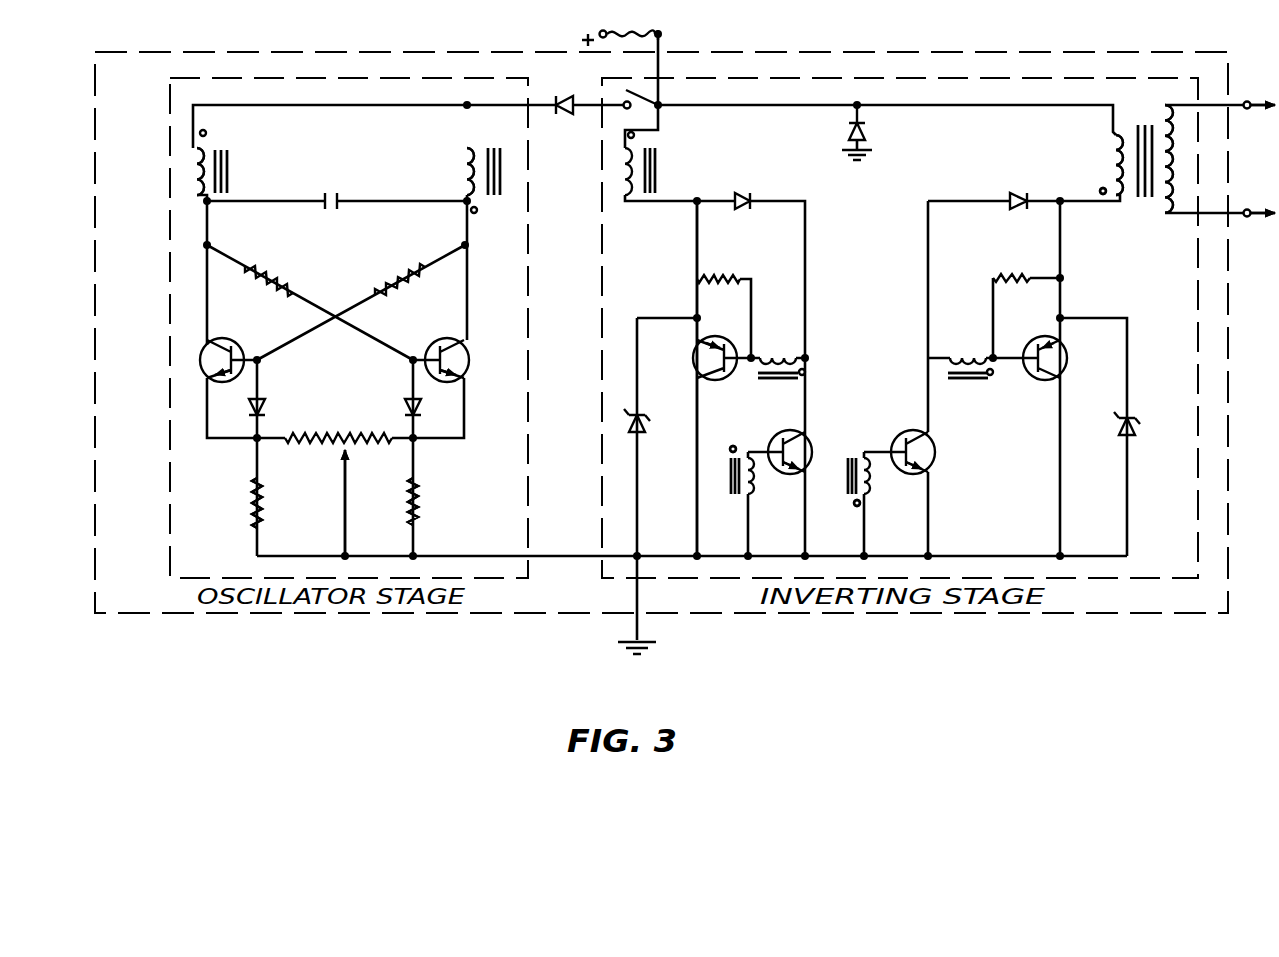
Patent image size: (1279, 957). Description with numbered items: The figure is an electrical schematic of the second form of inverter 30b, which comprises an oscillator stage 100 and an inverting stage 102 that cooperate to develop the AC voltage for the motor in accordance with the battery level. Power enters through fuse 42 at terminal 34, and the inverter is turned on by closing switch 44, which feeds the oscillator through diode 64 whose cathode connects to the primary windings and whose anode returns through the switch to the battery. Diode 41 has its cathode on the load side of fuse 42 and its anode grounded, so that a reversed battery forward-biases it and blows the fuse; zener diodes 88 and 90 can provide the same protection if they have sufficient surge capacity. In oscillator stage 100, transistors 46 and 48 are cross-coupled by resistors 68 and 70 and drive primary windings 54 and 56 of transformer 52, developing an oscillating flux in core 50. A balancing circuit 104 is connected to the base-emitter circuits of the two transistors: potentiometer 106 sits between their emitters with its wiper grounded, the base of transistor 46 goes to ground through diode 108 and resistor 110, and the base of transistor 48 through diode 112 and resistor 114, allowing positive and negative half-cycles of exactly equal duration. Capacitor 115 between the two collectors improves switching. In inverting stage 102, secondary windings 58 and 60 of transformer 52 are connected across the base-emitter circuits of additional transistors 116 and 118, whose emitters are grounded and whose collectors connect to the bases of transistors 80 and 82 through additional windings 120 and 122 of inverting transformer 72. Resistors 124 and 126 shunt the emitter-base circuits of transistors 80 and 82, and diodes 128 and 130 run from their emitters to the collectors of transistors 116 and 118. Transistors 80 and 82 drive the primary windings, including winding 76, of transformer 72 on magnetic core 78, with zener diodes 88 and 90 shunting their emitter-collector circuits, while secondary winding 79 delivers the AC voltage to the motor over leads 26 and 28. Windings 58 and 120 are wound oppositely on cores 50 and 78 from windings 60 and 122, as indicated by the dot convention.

The lead 26 is at (1258, 98).
The lead 28 is at (1254, 222).
The inverter 30b is at (751, 614).
The battery terminal 34 is at (605, 33).
The diode 41 is at (866, 128).
The fuse 42 is at (656, 32).
The switch 44 is at (662, 100).
The transistor 46 is at (232, 348).
The transistor 48 is at (436, 342).
The core 50 is at (228, 178).
The transformer 52 is at (428, 147).
The primary winding 54 is at (198, 172).
The primary winding 56 is at (463, 178).
The secondary winding 58 is at (756, 488).
The secondary winding 60 is at (872, 490).
The diode 64 is at (572, 113).
The resistor 68 is at (268, 283).
The resistor 70 is at (396, 284).
The inverting transformer 72 is at (1082, 154).
The primary winding 76 is at (1124, 205).
The magnetic core 78 is at (660, 163).
The secondary winding 79 is at (1171, 215).
The transistor 80 is at (697, 366).
The transistor 82 is at (1066, 366).
The zener diode 88 is at (643, 438).
The zener diode 90 is at (1124, 440).
The oscillator stage 100 is at (498, 579).
The inverting stage 102 is at (1102, 578).
The balancing circuit 104 is at (424, 488).
The potentiometer 106 is at (368, 430).
The diode 108 is at (265, 404).
The resistor 110 is at (260, 494).
The diode 112 is at (402, 404).
The resistor 114 is at (422, 505).
The capacitor 115 is at (340, 200).
The transistor 116 is at (806, 440).
The transistor 118 is at (936, 455).
The additional winding 120 is at (790, 342).
The additional winding 122 is at (966, 343).
The resistor 124 is at (736, 282).
The resistor 126 is at (1032, 258).
The diode 128 is at (739, 212).
The diode 130 is at (1006, 208).